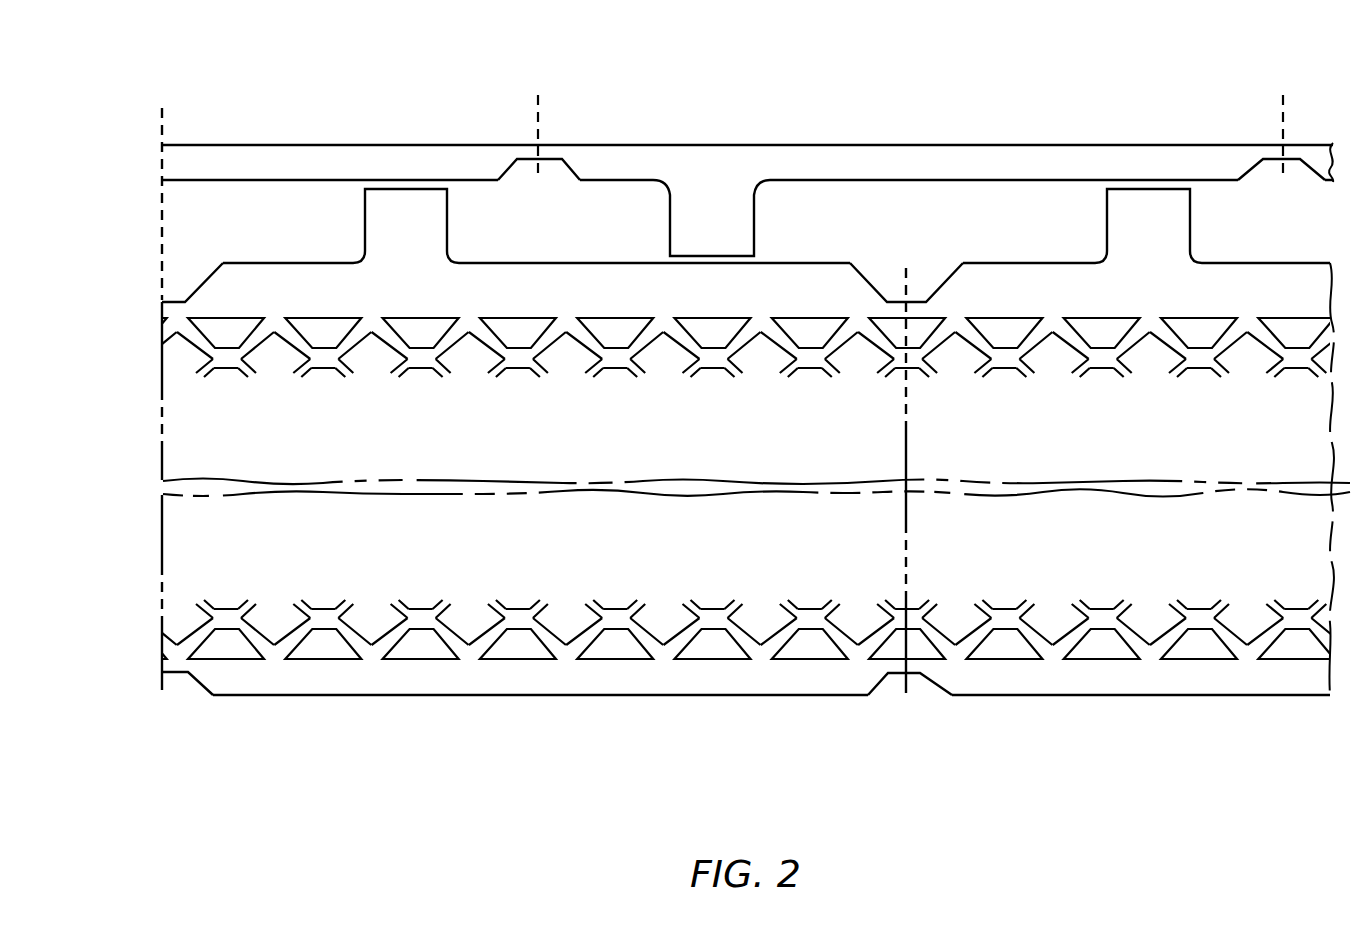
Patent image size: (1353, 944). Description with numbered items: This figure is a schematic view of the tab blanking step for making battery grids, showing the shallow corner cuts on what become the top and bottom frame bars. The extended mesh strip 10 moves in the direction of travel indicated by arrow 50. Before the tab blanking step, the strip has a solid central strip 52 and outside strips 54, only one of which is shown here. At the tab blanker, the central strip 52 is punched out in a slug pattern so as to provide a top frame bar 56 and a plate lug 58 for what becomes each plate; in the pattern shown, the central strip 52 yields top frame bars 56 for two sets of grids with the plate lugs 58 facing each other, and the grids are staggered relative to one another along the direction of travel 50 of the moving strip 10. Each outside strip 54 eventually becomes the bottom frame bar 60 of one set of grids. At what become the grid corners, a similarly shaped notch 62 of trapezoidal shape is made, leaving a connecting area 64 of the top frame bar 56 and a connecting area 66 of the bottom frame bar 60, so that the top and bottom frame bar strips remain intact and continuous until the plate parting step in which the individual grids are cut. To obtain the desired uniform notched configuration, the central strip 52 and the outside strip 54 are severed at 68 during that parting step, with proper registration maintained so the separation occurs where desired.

The extended mesh strip 10 is at (145, 537).
The direction of travel 50 is at (148, 457).
The central strip 52 is at (222, 85).
The outside strip 54 is at (250, 728).
The top frame bar 56 is at (452, 153).
The plate lug 58 is at (420, 233).
The bottom frame bar 60 is at (585, 682).
The notch 62 is at (188, 258).
The connecting area of the top frame bar 64 is at (918, 310).
The connecting area of the bottom frame bar 66 is at (918, 665).
The severing location 68 is at (160, 350).